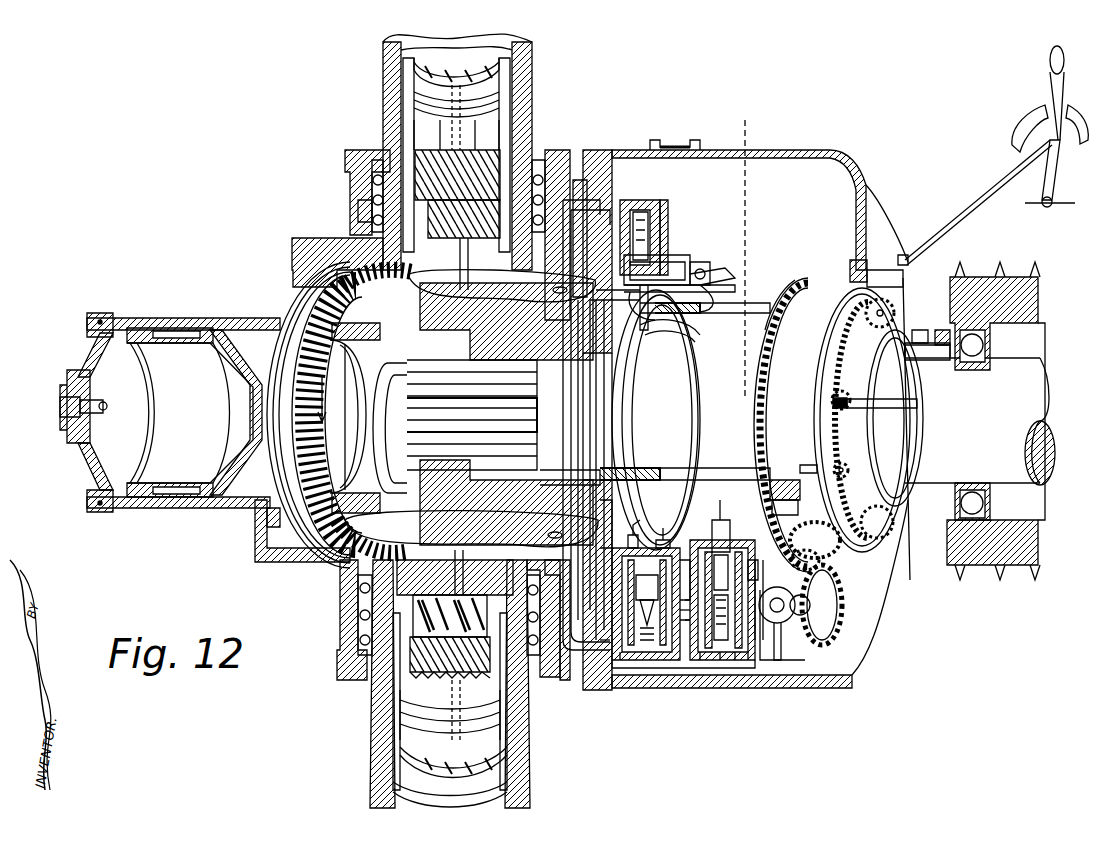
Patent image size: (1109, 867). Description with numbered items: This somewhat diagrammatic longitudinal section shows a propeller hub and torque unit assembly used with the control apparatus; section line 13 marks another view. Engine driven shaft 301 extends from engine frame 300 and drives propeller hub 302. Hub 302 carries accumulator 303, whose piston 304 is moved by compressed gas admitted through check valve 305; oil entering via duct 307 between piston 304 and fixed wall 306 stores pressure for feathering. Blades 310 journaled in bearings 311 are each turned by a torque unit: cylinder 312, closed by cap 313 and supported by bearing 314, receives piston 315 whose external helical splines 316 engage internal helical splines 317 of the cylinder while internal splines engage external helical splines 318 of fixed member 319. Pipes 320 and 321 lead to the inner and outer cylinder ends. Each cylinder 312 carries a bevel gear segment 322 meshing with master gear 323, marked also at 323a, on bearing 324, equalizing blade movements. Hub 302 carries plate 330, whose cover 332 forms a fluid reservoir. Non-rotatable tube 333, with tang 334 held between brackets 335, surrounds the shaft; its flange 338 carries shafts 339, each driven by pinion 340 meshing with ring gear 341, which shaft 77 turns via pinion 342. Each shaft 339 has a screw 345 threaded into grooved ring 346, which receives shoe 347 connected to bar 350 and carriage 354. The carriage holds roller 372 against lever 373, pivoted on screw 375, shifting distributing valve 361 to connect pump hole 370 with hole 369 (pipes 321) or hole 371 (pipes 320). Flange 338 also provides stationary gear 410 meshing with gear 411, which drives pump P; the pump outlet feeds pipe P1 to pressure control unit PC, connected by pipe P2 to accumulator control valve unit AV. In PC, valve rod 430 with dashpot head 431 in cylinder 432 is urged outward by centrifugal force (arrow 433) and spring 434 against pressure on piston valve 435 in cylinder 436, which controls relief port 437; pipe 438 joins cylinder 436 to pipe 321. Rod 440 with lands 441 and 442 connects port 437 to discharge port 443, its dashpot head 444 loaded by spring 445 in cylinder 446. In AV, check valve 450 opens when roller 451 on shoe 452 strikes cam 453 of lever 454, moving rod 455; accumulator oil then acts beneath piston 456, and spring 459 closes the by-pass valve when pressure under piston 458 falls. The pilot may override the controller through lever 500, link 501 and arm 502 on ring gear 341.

The section line 13 is at (718, 131).
The shaft 77 is at (898, 409).
The engine frame 300 is at (990, 278).
The engine driven shaft 301 is at (1026, 360).
The propeller hub 302 is at (345, 157).
The accumulator 303 is at (128, 292).
The piston 304 is at (180, 330).
The check valve 305 is at (58, 404).
The fixed wall 306 is at (348, 418).
The duct 307 is at (556, 480).
The blades 310 is at (385, 51).
The bearings 311 is at (373, 190).
The cylinder 312 is at (510, 80).
The cap 313 is at (505, 60).
The bearing 314 is at (345, 252).
The piston 315 is at (505, 96).
The external helical splines 316 is at (472, 150).
The internal helical splines 317 is at (360, 210).
The external helical splines 318 is at (492, 215).
The relatively fixed member 319 is at (505, 188).
The pipe 320 is at (578, 385).
The pipe 321 is at (582, 404).
The bevel gear segment 322 is at (322, 591).
The master gear 323 is at (310, 318).
The ring plate arrow 323a is at (339, 398).
The bearing 324 is at (300, 298).
The plate 330 is at (602, 158).
The cover 332 is at (822, 156).
The tube 333 is at (880, 460).
The tang 334 is at (914, 361).
The brackets 335 is at (945, 346).
The annular flange 338 is at (815, 411).
The shafts 339 is at (766, 310).
The pinion 340 is at (878, 330).
The ring gear 341 is at (888, 300).
The pinion 342 is at (845, 410).
The screw 345 is at (702, 313).
The grooved ring 346 is at (630, 405).
The shoe 347 is at (670, 334).
The bar 350 is at (705, 290).
The carriage 354 is at (720, 258).
The valve 361 is at (642, 205).
The hole 369 is at (632, 202).
The hole 370 is at (652, 226).
The hole 371 is at (708, 245).
The roller 372 is at (704, 272).
The lever 373 is at (726, 271).
The screw 375 is at (665, 212).
The stationary gear 410 is at (800, 280).
The gear 411 is at (836, 637).
The valve rod 430 is at (750, 668).
The dashpot head 431 is at (758, 668).
The cylinder 432 is at (732, 668).
The arrow 433 is at (712, 490).
The spring 434 is at (742, 668).
The piston valve 435 is at (724, 552).
The cylinder 436 is at (730, 517).
The relief port 437 is at (728, 560).
The pipe 438 is at (620, 668).
The rod 440 is at (790, 662).
The land 441 is at (798, 511).
The land 442 is at (752, 560).
The discharge port 443 is at (792, 491).
The dashpot head 444 is at (755, 665).
The spring 445 is at (815, 537).
The cylinder 446 is at (792, 558).
The check valve 450 is at (655, 668).
The roller 451 is at (665, 528).
The shoe 452 is at (640, 520).
The cam 453 is at (640, 548).
The lever 454 is at (630, 520).
The rod 455 is at (635, 668).
The piston 456 is at (680, 668).
The piston 458 is at (700, 668).
The spring 459 is at (645, 520).
The lever 500 is at (1046, 72).
The link 501 is at (998, 192).
The arm 502 is at (908, 264).
The accumulator control valve unit AV is at (552, 774).
The pump P is at (738, 738).
The pipe P1 is at (722, 668).
The pipe P2 is at (712, 668).
The pressure control unit PC is at (795, 806).